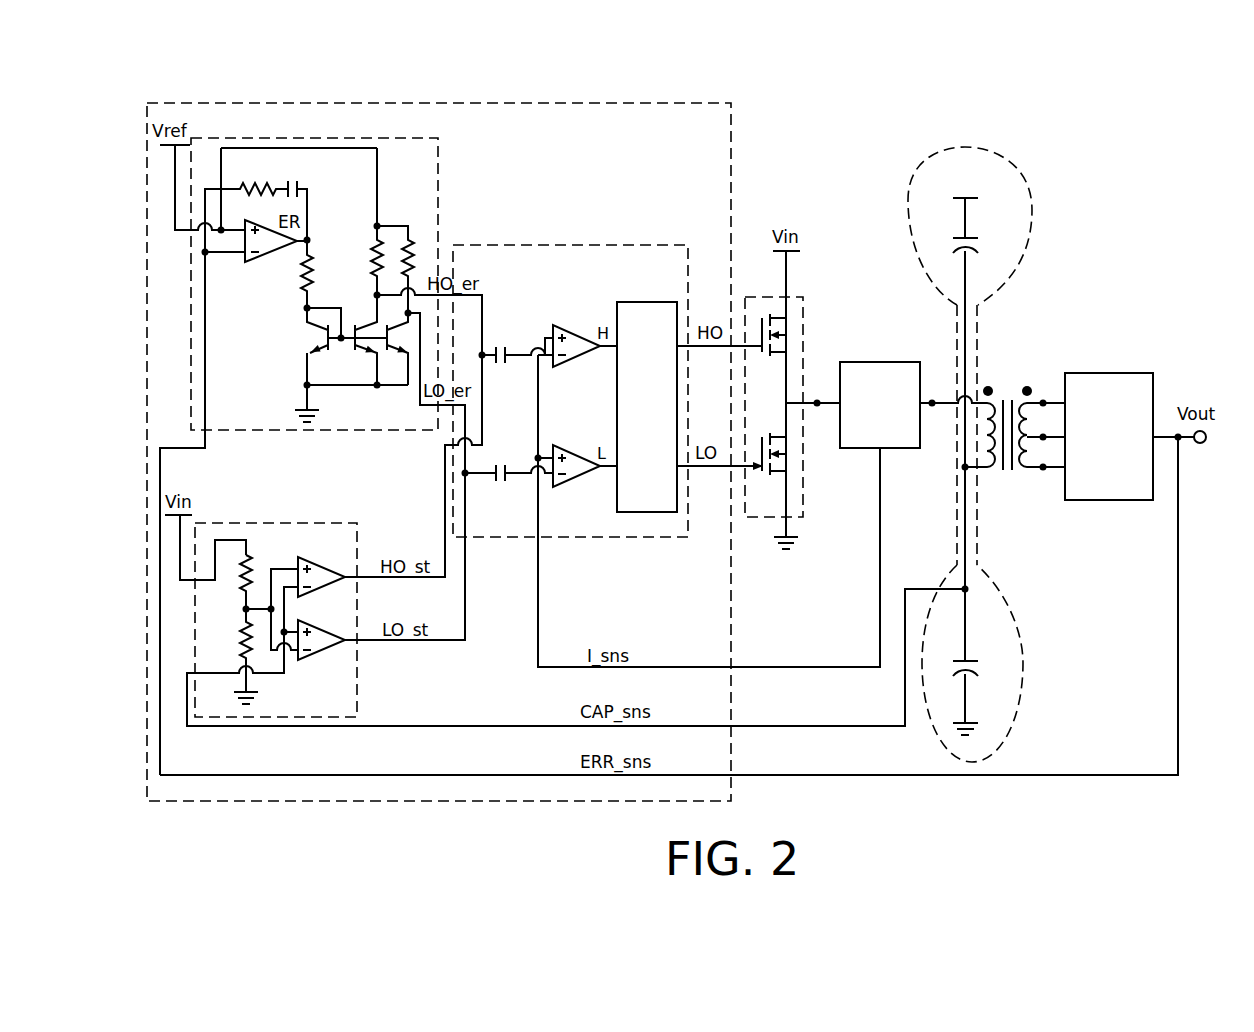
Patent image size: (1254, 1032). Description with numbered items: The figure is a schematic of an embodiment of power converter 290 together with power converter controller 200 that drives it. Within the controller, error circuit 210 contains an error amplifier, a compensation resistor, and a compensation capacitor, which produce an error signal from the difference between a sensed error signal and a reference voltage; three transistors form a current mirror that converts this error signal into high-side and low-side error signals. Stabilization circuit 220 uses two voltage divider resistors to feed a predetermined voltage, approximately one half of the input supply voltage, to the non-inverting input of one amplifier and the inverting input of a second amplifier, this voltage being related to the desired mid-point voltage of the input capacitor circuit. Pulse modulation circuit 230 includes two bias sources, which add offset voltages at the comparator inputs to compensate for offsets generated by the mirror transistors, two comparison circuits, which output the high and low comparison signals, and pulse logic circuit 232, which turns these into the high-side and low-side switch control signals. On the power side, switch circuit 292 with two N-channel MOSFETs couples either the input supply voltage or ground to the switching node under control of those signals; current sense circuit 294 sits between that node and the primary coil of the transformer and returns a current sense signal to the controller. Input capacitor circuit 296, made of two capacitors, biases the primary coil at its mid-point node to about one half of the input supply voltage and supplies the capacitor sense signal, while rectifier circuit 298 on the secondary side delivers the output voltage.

The power converter controller 200 is at (581, 103).
The error circuit 210 is at (438, 168).
The stabilization circuit 220 is at (281, 523).
The pulse modulation circuit 230 is at (591, 245).
The pulse logic circuit 232 is at (640, 302).
The power converter 290 is at (879, 103).
The switch circuit 292 is at (803, 302).
The current sense circuit 294 is at (893, 362).
The input capacitor circuit 296 is at (1034, 188).
The rectifier circuit 298 is at (1130, 373).